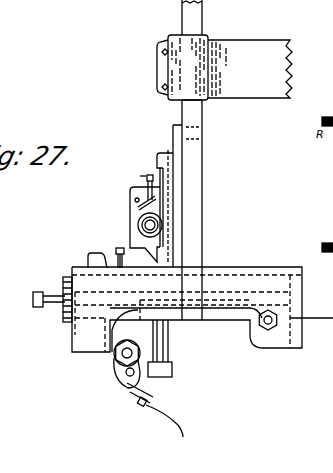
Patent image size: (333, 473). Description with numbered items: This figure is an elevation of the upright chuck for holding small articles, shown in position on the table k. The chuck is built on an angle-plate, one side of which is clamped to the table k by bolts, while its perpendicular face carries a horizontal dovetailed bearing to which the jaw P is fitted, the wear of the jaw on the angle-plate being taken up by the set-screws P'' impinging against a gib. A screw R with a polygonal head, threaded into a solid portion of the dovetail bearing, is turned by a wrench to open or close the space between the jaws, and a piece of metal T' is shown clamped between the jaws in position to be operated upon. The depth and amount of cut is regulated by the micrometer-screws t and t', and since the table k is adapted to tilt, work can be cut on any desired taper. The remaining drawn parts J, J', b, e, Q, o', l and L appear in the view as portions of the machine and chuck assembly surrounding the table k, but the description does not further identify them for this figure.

The flag or pennant J is at (250, 69).
The flag holder block J' is at (182, 67).
The rod section b is at (192, 109).
The vertical rod e is at (192, 160).
The piece of metal T' is at (167, 196).
The jaw P is at (146, 180).
The set-screw P'' is at (133, 177).
The lever Q is at (145, 203).
The screw R is at (146, 222).
The screw o' is at (115, 258).
The horizontal bar l is at (187, 309).
The table k is at (208, 323).
The micrometer-screw t is at (43, 292).
The micrometer-screw t' is at (59, 299).
The lower support L is at (184, 355).